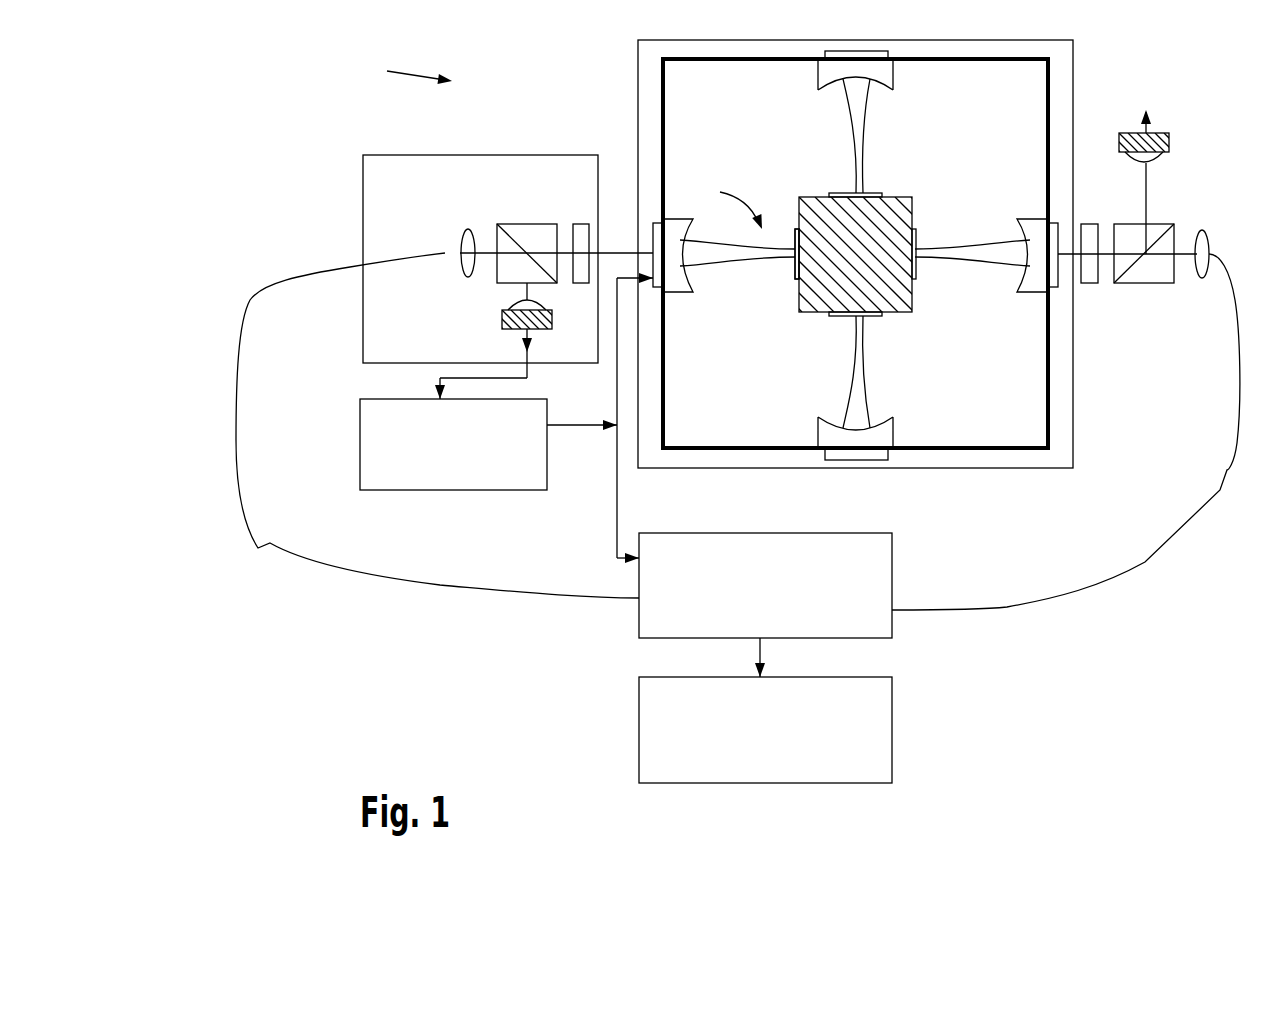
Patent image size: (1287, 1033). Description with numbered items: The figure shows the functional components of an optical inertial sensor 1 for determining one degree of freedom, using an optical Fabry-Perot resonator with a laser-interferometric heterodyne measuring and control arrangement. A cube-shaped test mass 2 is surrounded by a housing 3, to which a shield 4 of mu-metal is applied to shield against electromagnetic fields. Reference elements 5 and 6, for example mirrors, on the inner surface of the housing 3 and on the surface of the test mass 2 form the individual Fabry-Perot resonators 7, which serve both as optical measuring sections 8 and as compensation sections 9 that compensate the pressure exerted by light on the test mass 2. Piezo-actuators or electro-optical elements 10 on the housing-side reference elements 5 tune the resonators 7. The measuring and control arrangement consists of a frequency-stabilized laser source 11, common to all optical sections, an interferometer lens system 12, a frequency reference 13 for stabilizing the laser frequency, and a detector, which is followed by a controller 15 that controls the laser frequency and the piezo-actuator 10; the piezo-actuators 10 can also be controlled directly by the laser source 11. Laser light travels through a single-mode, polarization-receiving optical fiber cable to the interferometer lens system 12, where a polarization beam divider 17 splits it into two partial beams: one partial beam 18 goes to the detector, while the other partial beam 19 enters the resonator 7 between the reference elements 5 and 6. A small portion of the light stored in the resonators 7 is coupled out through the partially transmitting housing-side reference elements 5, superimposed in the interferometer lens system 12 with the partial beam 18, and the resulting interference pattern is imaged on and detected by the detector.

The optical inertial sensor 1 is at (406, 71).
The test mass 2 is at (826, 233).
The housing 3 is at (1045, 110).
The shield 4 is at (637, 97).
The housing-side reference element 5 is at (680, 290).
The test-mass-side reference element 6 is at (795, 277).
The Fabry-Perot resonator 7 is at (734, 196).
The optical measuring section 8 is at (748, 260).
The compensation section 9 is at (948, 260).
The piezo-actuator 10 is at (653, 232).
The laser source 11 is at (867, 533).
The interferometer lens system 12 is at (363, 220).
The frequency reference 13 is at (893, 722).
The controller 15 is at (462, 490).
The polarization beam divider 17 is at (505, 223).
The first partial beam 18 is at (525, 287).
The second partial beam 19 is at (563, 252).